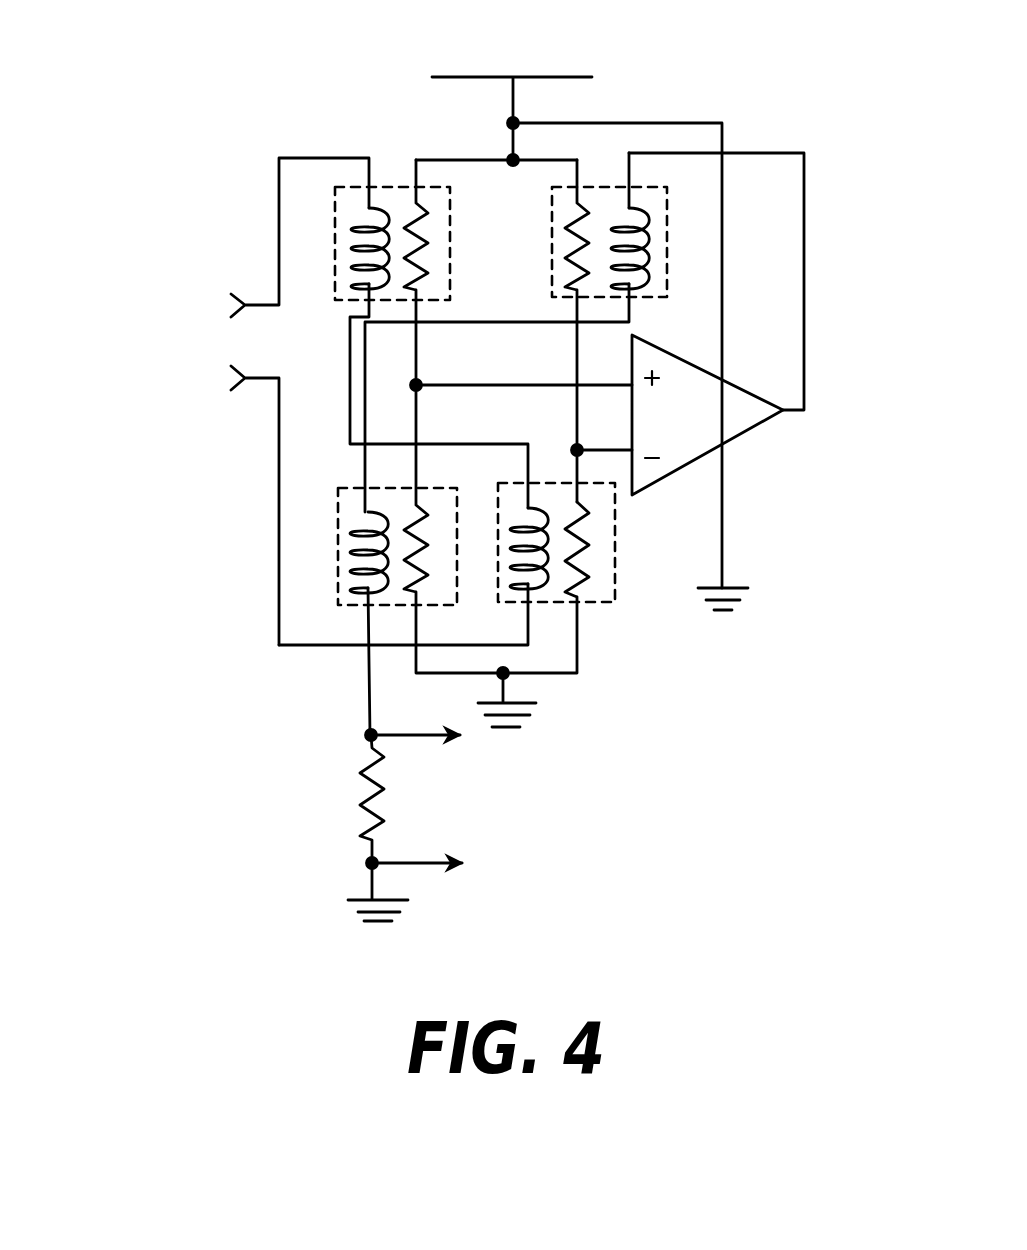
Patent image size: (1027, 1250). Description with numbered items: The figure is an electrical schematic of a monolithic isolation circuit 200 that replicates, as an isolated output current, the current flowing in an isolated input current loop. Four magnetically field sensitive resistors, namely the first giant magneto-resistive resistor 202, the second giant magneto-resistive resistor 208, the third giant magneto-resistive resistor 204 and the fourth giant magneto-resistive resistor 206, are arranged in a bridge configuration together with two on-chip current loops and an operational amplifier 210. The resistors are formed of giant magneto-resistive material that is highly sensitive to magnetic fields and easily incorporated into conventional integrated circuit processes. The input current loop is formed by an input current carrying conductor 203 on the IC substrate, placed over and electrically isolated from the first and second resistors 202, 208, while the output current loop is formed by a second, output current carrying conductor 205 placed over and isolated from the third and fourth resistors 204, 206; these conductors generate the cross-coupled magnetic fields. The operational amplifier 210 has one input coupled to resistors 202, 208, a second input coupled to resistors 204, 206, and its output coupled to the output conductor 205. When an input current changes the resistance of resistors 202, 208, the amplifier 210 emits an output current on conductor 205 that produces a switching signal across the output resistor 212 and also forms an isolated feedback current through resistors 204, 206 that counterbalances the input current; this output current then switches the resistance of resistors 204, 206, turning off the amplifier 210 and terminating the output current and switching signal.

The monolithic isolation circuit 200 is at (108, 103).
The first giant magneto-resistive resistor 202 is at (362, 243).
The input current carrying conductor 203 is at (303, 158).
The third giant magneto-resistive resistor 204 is at (640, 236).
The output current carrying conductor 205 is at (804, 308).
The fourth giant magneto-resistive resistor 206 is at (347, 527).
The second giant magneto-resistive resistor 208 is at (587, 573).
The operational amplifier 210 is at (742, 418).
The resistor 212 is at (367, 803).